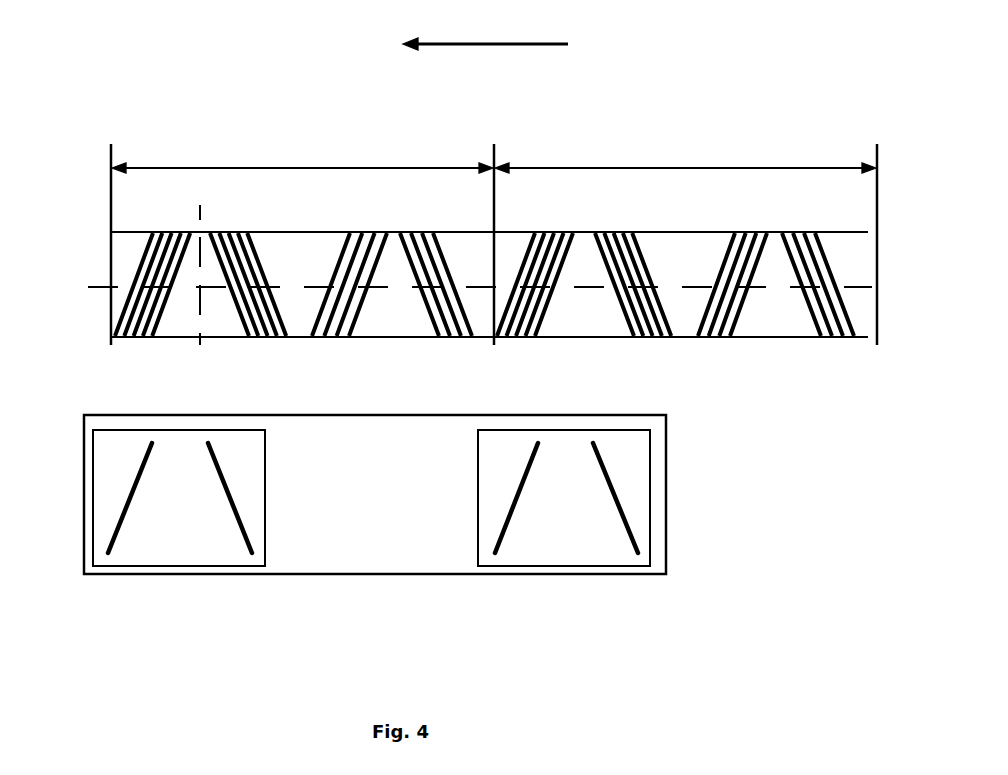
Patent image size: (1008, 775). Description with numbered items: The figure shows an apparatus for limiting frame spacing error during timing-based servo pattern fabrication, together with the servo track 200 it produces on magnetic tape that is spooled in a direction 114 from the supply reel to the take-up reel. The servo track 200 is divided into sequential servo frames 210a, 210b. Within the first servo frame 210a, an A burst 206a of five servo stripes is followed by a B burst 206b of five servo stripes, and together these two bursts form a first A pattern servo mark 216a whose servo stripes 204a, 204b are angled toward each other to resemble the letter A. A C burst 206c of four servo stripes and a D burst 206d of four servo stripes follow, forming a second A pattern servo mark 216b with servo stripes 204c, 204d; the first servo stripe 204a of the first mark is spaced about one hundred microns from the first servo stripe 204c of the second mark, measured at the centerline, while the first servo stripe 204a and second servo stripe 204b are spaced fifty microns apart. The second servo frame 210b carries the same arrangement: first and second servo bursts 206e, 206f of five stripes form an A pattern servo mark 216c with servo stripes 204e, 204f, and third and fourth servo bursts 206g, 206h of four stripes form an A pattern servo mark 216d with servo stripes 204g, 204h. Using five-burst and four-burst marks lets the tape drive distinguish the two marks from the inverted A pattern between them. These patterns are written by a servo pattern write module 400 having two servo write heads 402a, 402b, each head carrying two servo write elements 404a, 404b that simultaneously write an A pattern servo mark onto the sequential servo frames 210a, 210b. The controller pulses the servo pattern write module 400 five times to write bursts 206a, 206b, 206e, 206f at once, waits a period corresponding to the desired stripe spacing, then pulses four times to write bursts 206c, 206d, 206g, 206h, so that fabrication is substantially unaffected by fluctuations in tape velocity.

The servo track 200 is at (128, 78).
The direction 114 is at (485, 44).
The servo frame 210a is at (289, 168).
The servo frame 210b is at (668, 168).
The first servo stripe 204a is at (130, 293).
The second servo stripe 204b is at (243, 293).
The first servo stripe 204c is at (329, 293).
The servo stripe 204d is at (430, 293).
The servo stripe 204e is at (514, 293).
The servo stripe 204f is at (629, 293).
The servo stripe 204g is at (712, 293).
The servo stripe 204h is at (814, 293).
The A burst 206a is at (191, 231).
The B burst 206b is at (248, 231).
The C burst 206c is at (388, 231).
The D burst 206d is at (434, 231).
The first servo burst 206e is at (574, 231).
The second servo burst 206f is at (633, 231).
The third servo burst 206g is at (768, 231).
The fourth servo burst 206h is at (815, 231).
The first A pattern servo mark 216a is at (290, 343).
The second A pattern servo mark 216b is at (476, 343).
The A pattern servo mark 216c is at (674, 343).
The A pattern servo mark 216d is at (858, 343).
The servo pattern write module 400 is at (283, 610).
The servo write head 402a is at (93, 452).
The servo write head 402b is at (478, 452).
The servo write element 404a is at (130, 493).
The servo write element 404b is at (228, 496).